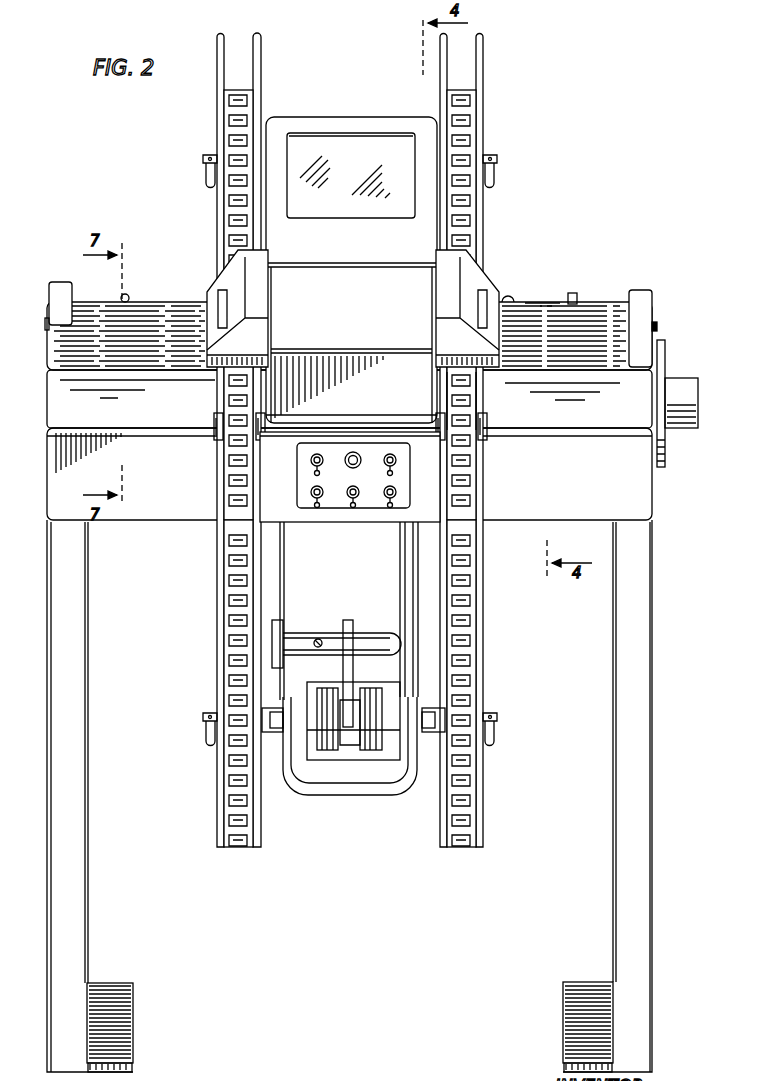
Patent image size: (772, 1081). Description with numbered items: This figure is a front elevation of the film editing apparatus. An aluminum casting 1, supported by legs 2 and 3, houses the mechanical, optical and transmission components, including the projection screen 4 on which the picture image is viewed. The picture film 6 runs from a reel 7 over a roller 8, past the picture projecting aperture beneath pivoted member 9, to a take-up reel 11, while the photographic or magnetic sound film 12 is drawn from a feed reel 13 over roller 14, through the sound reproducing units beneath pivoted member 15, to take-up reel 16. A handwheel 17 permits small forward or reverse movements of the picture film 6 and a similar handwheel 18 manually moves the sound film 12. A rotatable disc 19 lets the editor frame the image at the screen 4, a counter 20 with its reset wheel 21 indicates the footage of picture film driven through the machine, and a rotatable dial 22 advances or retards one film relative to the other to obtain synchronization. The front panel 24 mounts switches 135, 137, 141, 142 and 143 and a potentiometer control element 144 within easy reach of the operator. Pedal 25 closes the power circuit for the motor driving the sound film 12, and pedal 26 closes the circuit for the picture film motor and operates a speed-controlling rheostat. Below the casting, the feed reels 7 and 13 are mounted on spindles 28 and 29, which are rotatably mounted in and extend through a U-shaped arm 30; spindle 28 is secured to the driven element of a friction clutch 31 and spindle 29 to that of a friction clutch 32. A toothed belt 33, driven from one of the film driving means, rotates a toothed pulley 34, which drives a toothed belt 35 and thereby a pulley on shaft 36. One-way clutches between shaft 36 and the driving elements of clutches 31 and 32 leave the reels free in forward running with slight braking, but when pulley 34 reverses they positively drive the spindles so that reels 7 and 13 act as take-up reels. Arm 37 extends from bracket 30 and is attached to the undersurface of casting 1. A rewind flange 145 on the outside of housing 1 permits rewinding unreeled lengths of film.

The aluminum casting 1 is at (640, 493).
The leg 2 is at (50, 797).
The leg 3 is at (652, 797).
The projection screen 4 is at (346, 150).
The picture film 6 is at (466, 402).
The reel 7 is at (483, 797).
The roller 8 is at (481, 440).
The pivoted member 9 is at (486, 322).
The take-up reel 11 is at (480, 75).
The sound film 12 is at (222, 390).
The feed reel 13 is at (222, 797).
The roller 14 is at (214, 440).
The pivoted member 15 is at (208, 325).
The take-up reel 16 is at (222, 75).
The handwheel 17 is at (652, 290).
The handwheel 18 is at (55, 290).
The rotatable disc 19 is at (512, 297).
The counter 20 is at (542, 302).
The reset wheel 21 is at (575, 294).
The rotatable dial 22 is at (132, 300).
The front panel 24 is at (373, 500).
The pedal 25 is at (125, 1012).
The pedal 26 is at (573, 1010).
The spindle 28 is at (420, 732).
The spindle 29 is at (285, 732).
The U-shaped arm 30 is at (360, 783).
The friction clutch 31 is at (375, 748).
The friction clutch 32 is at (322, 748).
The toothed belt 33 is at (282, 580).
The toothed pulley 34 is at (306, 633).
The toothed belt 35 is at (353, 675).
The shaft 36 is at (342, 745).
The arm 37 is at (402, 565).
The switch 135 is at (396, 460).
The switch 137 is at (396, 492).
The switch 141 is at (311, 492).
The switch 142 is at (311, 460).
The switch 143 is at (350, 498).
The potentiometer control element 144 is at (354, 452).
The rewind flange 145 is at (683, 385).